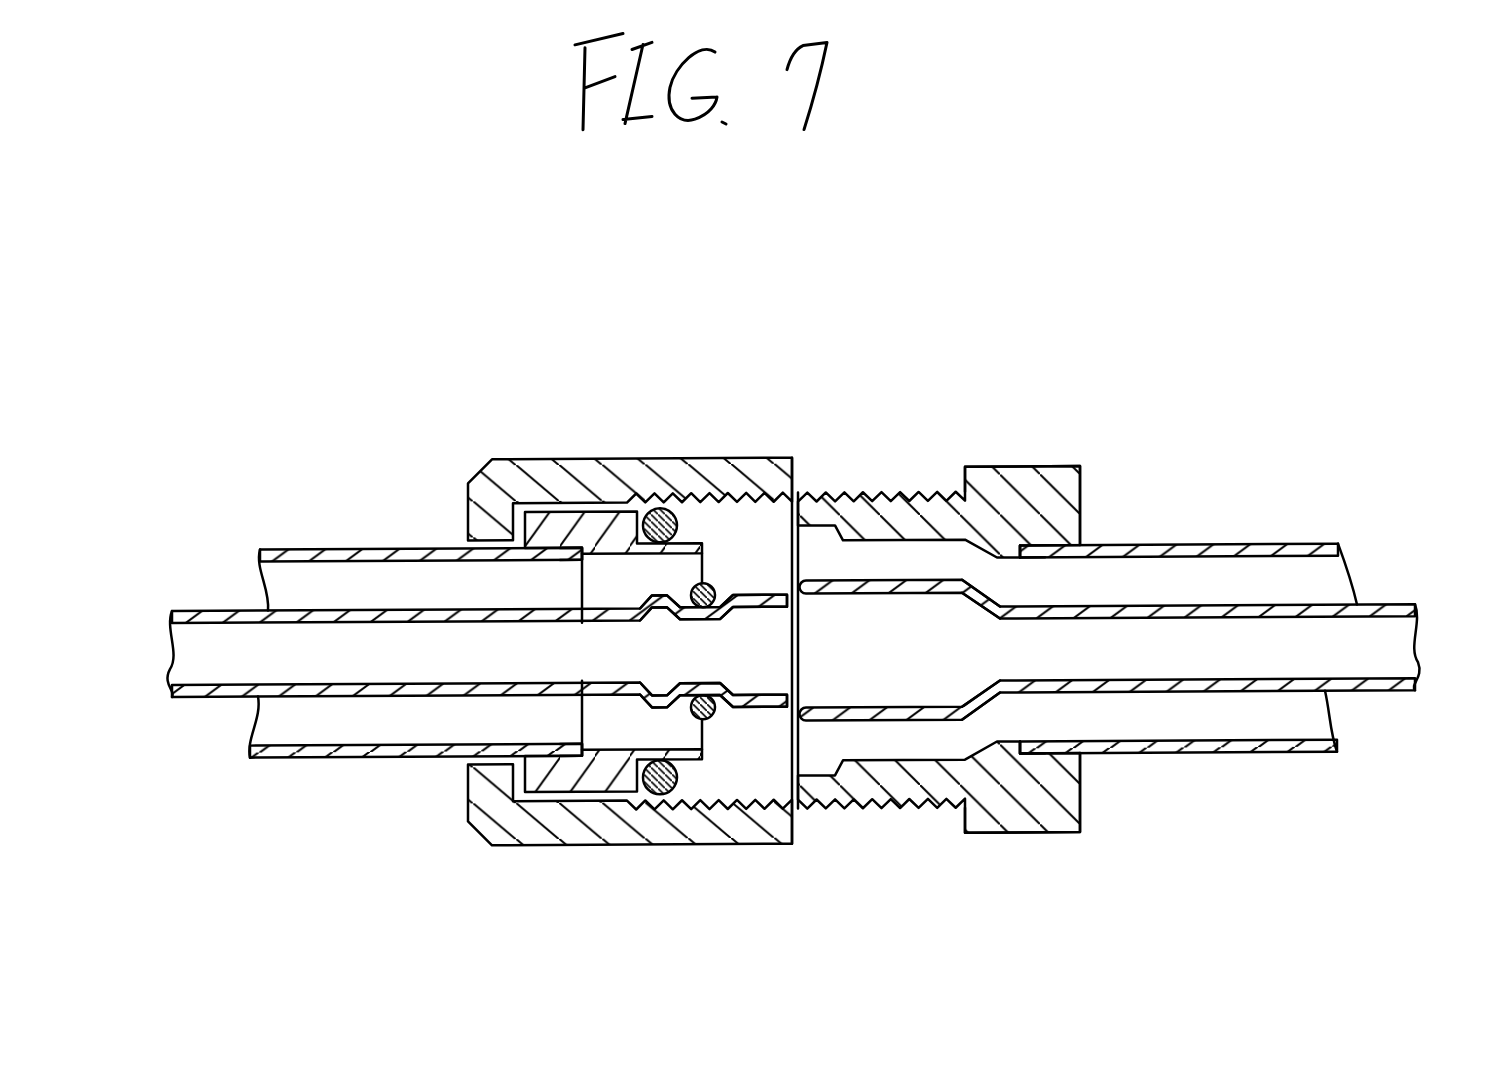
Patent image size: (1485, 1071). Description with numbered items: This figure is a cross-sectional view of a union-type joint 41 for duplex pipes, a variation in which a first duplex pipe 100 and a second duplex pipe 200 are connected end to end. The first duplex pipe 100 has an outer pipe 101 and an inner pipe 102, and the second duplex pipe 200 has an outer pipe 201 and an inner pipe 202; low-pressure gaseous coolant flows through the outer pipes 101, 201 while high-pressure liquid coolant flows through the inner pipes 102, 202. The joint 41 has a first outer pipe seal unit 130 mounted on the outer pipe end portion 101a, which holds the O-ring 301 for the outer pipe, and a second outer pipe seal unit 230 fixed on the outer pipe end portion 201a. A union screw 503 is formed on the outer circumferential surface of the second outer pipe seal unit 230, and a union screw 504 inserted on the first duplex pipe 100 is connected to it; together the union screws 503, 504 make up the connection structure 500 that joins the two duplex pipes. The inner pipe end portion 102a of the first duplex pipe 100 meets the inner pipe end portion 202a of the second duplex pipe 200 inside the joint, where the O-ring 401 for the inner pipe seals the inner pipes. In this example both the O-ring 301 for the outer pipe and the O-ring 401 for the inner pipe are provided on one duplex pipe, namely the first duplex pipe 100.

The joint for duplex pipes 41 is at (483, 249).
The first duplex pipe 100 is at (330, 459).
The outer pipe 101 is at (302, 551).
The outer pipe end portion 101a is at (557, 558).
The inner pipe 102 is at (191, 612).
The inner pipe end portion 102a is at (637, 615).
The first outer pipe seal unit 130 is at (587, 526).
The second duplex pipe 200 is at (1473, 460).
The outer pipe 201 is at (1325, 551).
The outer pipe end portion 201a is at (1053, 553).
The inner pipe 202 is at (1408, 612).
The inner pipe end portion 202a is at (1002, 618).
The second outer pipe seal unit 230 is at (1025, 486).
The O-ring for the outer pipe 301 is at (655, 512).
The O-ring for the inner pipe 401 is at (711, 587).
The connection structure 500 is at (768, 335).
The union screw 503 is at (887, 500).
The union screw 504 is at (784, 462).